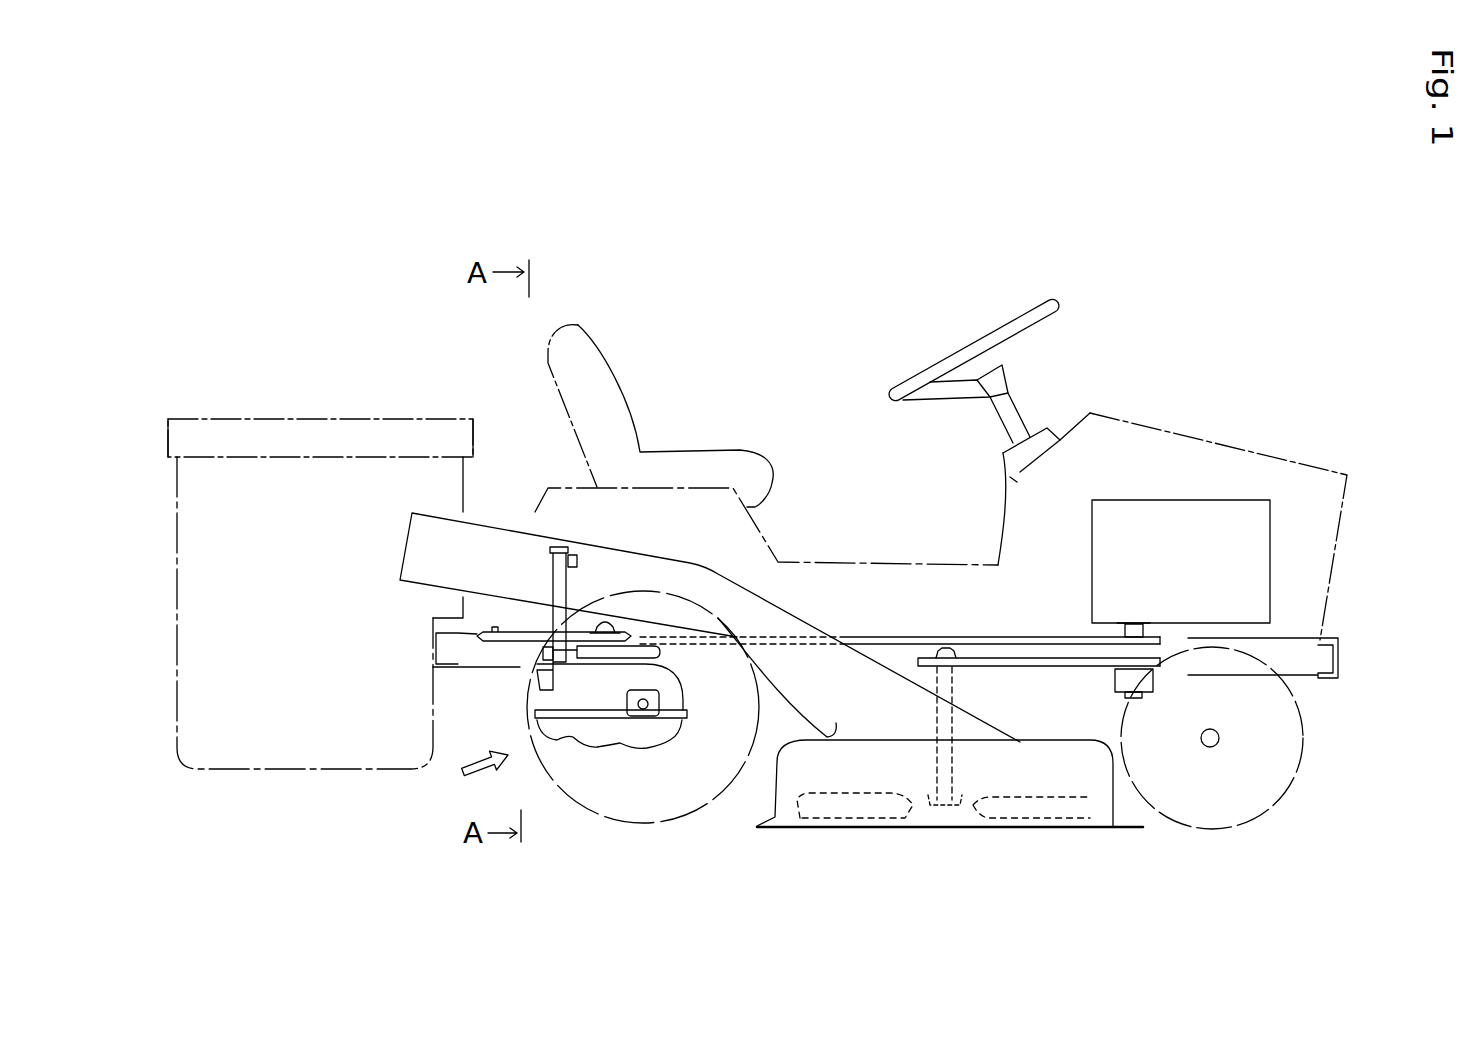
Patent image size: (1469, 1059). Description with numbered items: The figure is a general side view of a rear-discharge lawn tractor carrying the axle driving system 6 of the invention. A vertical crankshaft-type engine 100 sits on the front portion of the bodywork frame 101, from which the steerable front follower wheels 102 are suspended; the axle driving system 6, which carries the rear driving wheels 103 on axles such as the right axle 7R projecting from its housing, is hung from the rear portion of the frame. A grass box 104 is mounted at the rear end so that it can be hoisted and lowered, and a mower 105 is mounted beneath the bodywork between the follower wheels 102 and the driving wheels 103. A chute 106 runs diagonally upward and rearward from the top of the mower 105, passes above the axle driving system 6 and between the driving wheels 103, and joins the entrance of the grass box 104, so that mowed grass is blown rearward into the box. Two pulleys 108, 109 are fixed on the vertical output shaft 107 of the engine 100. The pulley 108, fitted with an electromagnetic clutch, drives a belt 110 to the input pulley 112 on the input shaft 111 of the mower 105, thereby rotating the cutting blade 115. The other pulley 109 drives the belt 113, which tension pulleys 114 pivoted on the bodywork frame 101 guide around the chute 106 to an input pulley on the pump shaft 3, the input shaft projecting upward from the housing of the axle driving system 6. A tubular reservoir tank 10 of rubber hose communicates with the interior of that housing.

The pump shaft 3 is at (605, 622).
The axle driving system 6 is at (474, 773).
The right axle 7R is at (643, 704).
The reservoir tank 10 is at (553, 577).
The engine 100 is at (1223, 500).
The bodywork frame 101 is at (1322, 677).
The follower wheel 102 is at (1300, 768).
The driving wheel 103 is at (720, 797).
The grass box 104 is at (279, 417).
The mower 105 is at (1115, 805).
The chute 106 is at (743, 568).
The vertical output shaft 107 is at (1130, 633).
The pulley 108 is at (1155, 675).
The pulley 109 is at (1158, 637).
The belt 110 is at (1030, 663).
The input shaft 111 is at (952, 683).
The input pulley 112 is at (930, 657).
The belt 113 is at (882, 637).
The tension pulley 114 is at (488, 643).
The cutting blade 115 is at (833, 817).